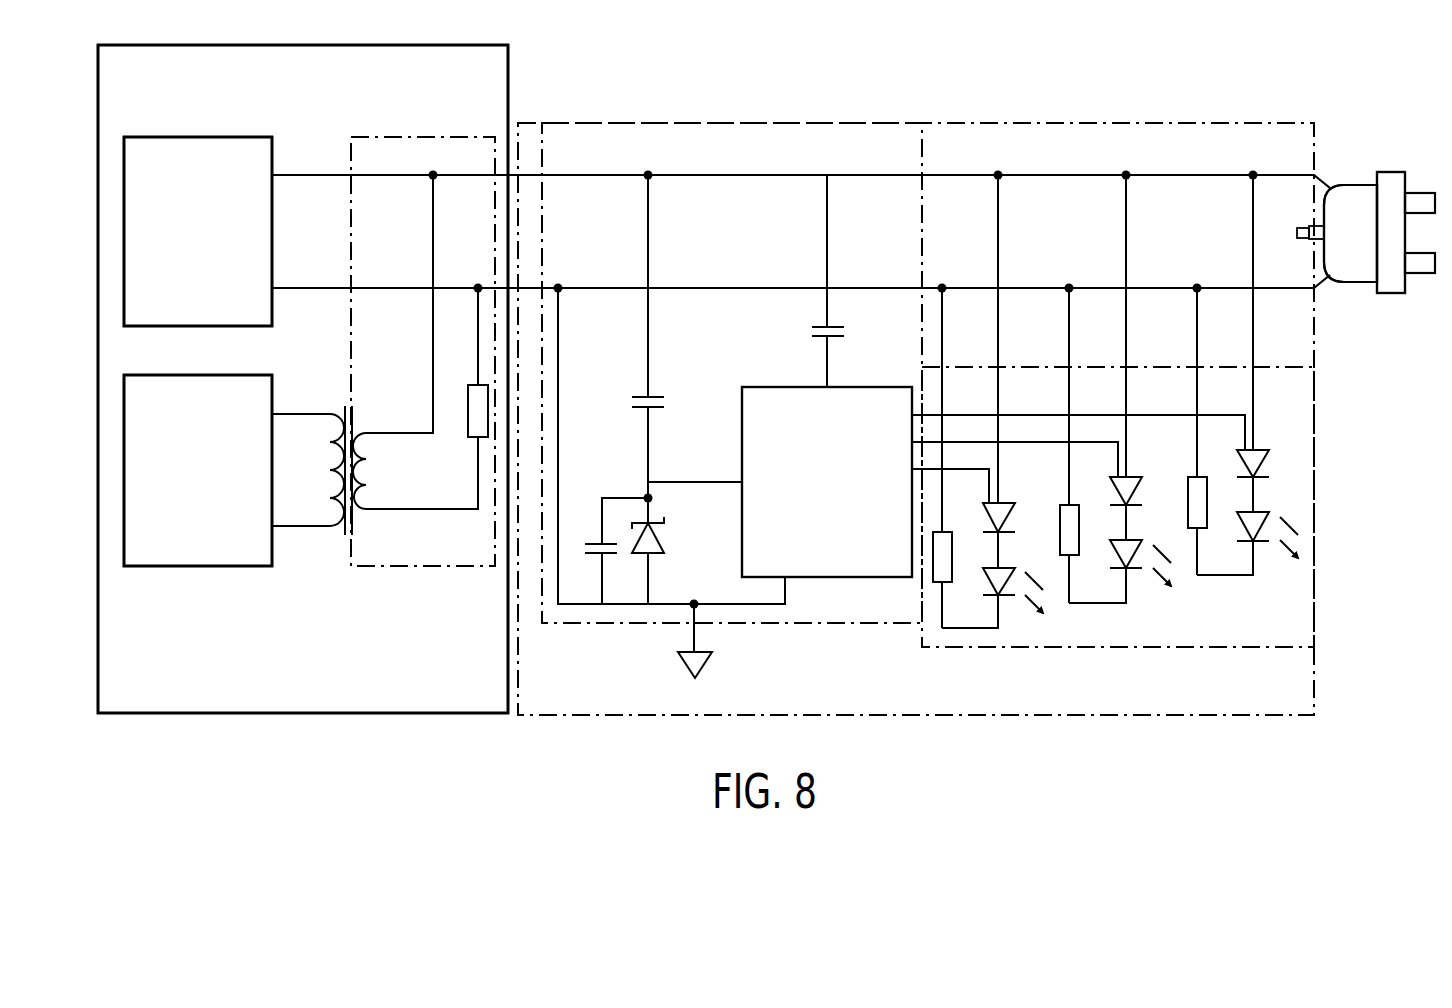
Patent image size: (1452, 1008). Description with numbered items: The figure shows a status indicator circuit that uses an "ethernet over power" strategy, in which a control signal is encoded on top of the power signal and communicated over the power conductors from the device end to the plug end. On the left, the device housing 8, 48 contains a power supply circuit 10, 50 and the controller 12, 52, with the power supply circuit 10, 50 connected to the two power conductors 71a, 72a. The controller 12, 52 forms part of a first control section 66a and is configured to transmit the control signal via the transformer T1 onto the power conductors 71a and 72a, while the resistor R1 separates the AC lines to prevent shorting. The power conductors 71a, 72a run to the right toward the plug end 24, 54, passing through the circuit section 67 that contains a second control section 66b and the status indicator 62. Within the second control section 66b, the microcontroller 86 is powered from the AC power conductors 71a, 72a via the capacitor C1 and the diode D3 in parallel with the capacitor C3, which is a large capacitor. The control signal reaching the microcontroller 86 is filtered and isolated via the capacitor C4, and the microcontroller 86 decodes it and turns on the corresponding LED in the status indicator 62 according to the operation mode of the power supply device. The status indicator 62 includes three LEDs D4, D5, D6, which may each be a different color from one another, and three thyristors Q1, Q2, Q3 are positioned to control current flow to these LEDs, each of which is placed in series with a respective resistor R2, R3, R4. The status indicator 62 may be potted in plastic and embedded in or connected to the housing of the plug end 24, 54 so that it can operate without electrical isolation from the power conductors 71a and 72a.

The device housing 8 is at (303, 45).
The device housing 48 is at (303, 379).
The power supply circuit 10 is at (200, 137).
The power supply circuit 50 is at (198, 231).
The controller 12 is at (200, 566).
The controller 52 is at (198, 470).
The plug end 24 is at (1348, 183).
The plug end 54 is at (1364, 232).
The status indicator 62 is at (1113, 434).
The first control section 66a is at (383, 385).
The second control section 66b is at (732, 410).
The light module circuit 67 is at (715, 123).
The power conductor 71a is at (575, 178).
The power conductor 72a is at (610, 288).
The microcontroller 86 is at (784, 387).
The transformer T1 is at (375, 355).
The resistor R1 is at (464, 376).
The capacitor C1 is at (631, 336).
The capacitor C3 is at (608, 551).
The capacitor C4 is at (809, 281).
The diode D3 is at (665, 551).
The thyristor Q1 is at (1238, 343).
The thyristor Q2 is at (1111, 357).
The thyristor Q3 is at (984, 371).
The resistor R2 is at (958, 458).
The resistor R3 is at (1085, 445).
The resistor R4 is at (1213, 431).
The LED D4 is at (1120, 571).
The LED D5 is at (992, 598).
The LED D6 is at (1247, 543).